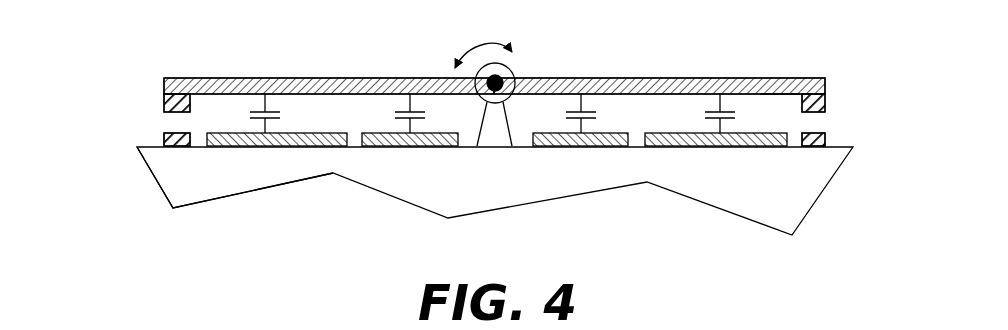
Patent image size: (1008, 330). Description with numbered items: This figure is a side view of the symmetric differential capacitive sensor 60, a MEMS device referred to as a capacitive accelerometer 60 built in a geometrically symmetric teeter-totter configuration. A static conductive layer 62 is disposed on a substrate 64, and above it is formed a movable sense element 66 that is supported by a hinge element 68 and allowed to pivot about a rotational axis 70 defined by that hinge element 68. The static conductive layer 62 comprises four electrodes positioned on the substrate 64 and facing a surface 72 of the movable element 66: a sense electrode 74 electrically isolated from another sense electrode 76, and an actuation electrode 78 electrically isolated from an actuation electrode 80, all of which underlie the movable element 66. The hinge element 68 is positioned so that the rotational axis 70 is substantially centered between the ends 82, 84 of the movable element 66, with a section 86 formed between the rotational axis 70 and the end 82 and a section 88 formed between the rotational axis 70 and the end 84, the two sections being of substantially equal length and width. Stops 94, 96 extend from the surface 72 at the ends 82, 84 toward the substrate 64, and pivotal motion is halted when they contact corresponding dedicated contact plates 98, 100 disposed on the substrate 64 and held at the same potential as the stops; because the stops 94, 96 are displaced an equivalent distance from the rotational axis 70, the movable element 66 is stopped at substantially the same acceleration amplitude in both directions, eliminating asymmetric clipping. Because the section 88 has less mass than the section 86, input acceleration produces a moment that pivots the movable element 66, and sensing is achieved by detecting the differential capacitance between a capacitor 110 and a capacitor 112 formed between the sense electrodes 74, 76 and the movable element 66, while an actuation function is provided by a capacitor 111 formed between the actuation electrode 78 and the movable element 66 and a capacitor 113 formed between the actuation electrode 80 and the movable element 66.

The symmetric differential capacitive sensor 60 is at (698, 271).
The static conductive layer 62 is at (112, 138).
The substrate 64 is at (177, 192).
The movable sense element 66 is at (112, 87).
The hinge element 68 is at (508, 65).
The rotational axis 70 is at (455, 64).
The surface 72 is at (775, 96).
The sense electrode 74 is at (395, 147).
The sense electrode 76 is at (575, 147).
The actuation electrode 78 is at (317, 147).
The actuation electrode 80 is at (693, 147).
The end 82 is at (164, 82).
The end 84 is at (826, 92).
The section 86 is at (310, 78).
The section 88 is at (643, 77).
The stop 94 is at (164, 101).
The stop 96 is at (825, 100).
The contact plate 98 is at (148, 134).
The contact plate 100 is at (828, 135).
The capacitor 110 is at (400, 109).
The capacitor 111 is at (258, 109).
The capacitor 112 is at (570, 109).
The capacitor 113 is at (710, 109).